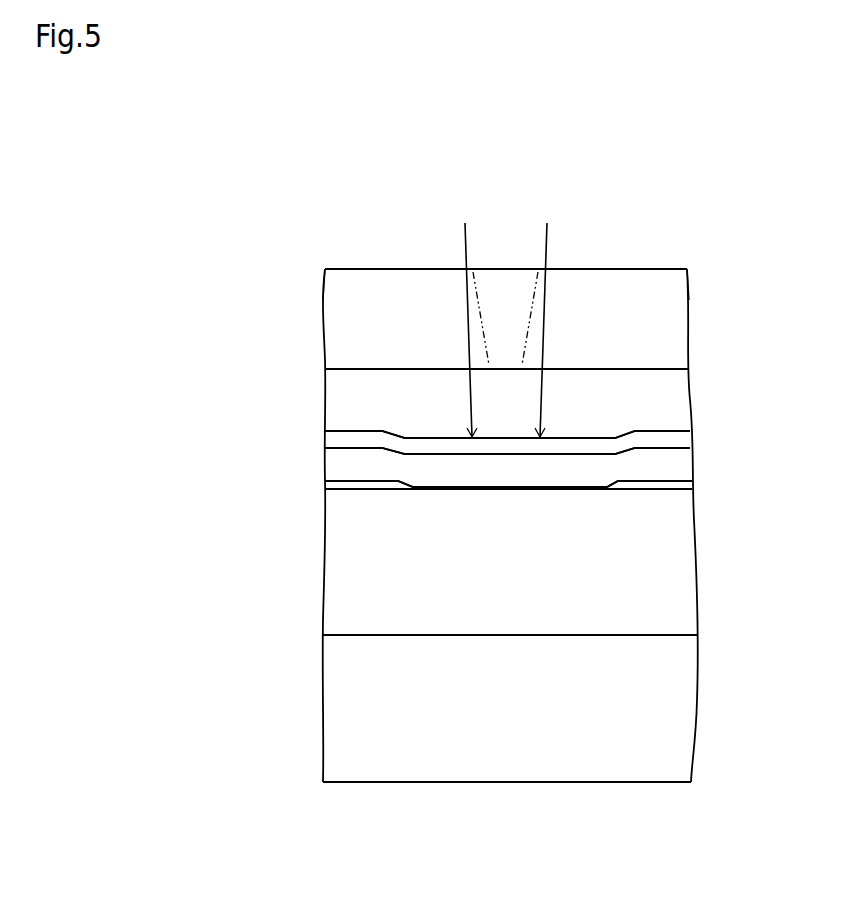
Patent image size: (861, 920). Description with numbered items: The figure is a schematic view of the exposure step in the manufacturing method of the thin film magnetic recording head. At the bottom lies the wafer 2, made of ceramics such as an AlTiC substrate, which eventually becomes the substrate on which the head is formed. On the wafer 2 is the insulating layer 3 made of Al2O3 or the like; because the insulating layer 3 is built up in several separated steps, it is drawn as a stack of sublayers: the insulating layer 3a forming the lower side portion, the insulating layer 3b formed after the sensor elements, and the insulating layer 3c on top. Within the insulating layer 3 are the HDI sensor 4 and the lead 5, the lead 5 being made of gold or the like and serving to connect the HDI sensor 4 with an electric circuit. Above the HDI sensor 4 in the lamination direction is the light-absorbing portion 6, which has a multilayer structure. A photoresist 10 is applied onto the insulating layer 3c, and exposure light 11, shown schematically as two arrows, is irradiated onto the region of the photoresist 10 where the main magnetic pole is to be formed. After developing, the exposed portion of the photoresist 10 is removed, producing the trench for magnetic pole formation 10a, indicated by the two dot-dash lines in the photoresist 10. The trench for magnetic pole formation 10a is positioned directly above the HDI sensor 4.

The wafer 2 is at (672, 752).
The insulating layer 3 is at (225, 460).
The insulating layer 3a is at (355, 577).
The insulating layer 3b is at (355, 468).
The insulating layer 3c is at (358, 405).
The HDI sensor 4 is at (565, 488).
The lead 5 is at (688, 479).
The light-absorbing portion 6 is at (673, 443).
The photoresist 10 is at (670, 315).
The trench for magnetic pole formation 10a is at (533, 297).
The exposure light 11 is at (465, 245).